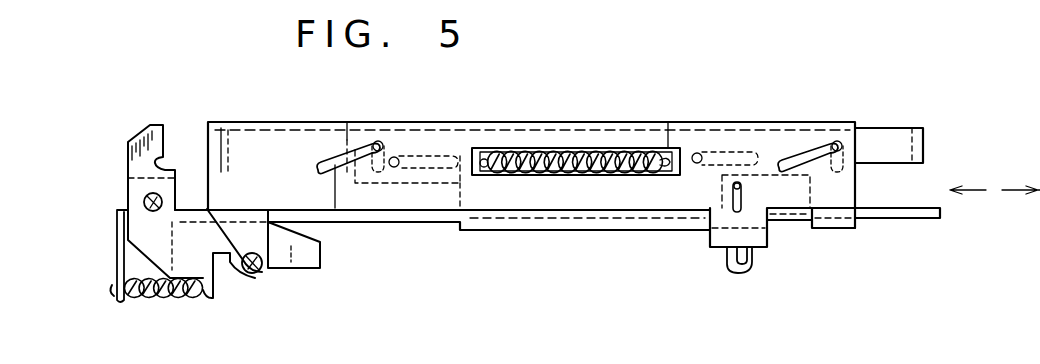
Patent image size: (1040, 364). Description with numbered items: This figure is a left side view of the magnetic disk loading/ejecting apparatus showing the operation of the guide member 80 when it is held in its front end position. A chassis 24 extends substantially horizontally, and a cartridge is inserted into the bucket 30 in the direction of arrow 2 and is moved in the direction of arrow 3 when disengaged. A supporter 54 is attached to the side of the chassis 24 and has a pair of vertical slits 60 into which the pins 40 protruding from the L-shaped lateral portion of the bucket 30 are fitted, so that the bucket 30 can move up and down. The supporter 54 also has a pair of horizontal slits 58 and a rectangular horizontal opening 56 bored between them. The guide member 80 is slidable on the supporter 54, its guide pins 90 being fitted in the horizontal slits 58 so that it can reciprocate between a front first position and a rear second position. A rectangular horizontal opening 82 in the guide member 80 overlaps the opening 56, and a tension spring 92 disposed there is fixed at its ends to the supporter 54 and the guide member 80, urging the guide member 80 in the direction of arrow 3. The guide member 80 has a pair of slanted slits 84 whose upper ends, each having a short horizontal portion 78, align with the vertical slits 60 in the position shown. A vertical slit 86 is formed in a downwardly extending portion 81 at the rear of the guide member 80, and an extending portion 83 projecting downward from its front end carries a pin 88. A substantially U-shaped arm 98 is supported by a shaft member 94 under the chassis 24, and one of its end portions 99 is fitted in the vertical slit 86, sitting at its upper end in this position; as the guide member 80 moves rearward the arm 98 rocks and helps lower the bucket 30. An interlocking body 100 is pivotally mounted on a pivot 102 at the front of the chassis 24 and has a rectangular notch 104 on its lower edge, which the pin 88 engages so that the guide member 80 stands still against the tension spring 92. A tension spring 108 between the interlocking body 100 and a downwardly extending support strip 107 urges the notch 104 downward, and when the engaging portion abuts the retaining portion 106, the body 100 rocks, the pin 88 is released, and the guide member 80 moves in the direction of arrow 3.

The arrow 2 is at (975, 192).
The arrow 3 is at (1012, 192).
The chassis 24 is at (887, 216).
The bucket 30 is at (926, 148).
The pins 40 is at (377, 138).
The supporter 54 is at (545, 150).
The rectangular horizontal opening 56 is at (481, 148).
The horizontal slits 58 is at (438, 168).
The vertical slits 60 is at (398, 157).
The short horizontal portion 78 is at (370, 138).
The guide member 80 is at (250, 142).
The downwardly extending portion 81 is at (713, 236).
The rectangular horizontal opening 82 is at (601, 176).
The extending portion 83 is at (276, 226).
The slanted slits 84 is at (326, 160).
The vertical slit 86 is at (742, 200).
The pin 88 is at (262, 270).
The guide pins 90 is at (392, 166).
The tension spring 92 is at (600, 156).
The shaft member 94 is at (740, 272).
The substantially U-shaped arm 98 is at (755, 258).
The end portions 99 is at (732, 184).
The interlocking body 100 is at (211, 300).
The pivot 102 is at (144, 202).
The rectangular notch 104 is at (226, 268).
The retaining portion 106 is at (168, 140).
The downwardly extending support strip 107 is at (116, 256).
The tension spring 108 is at (157, 296).